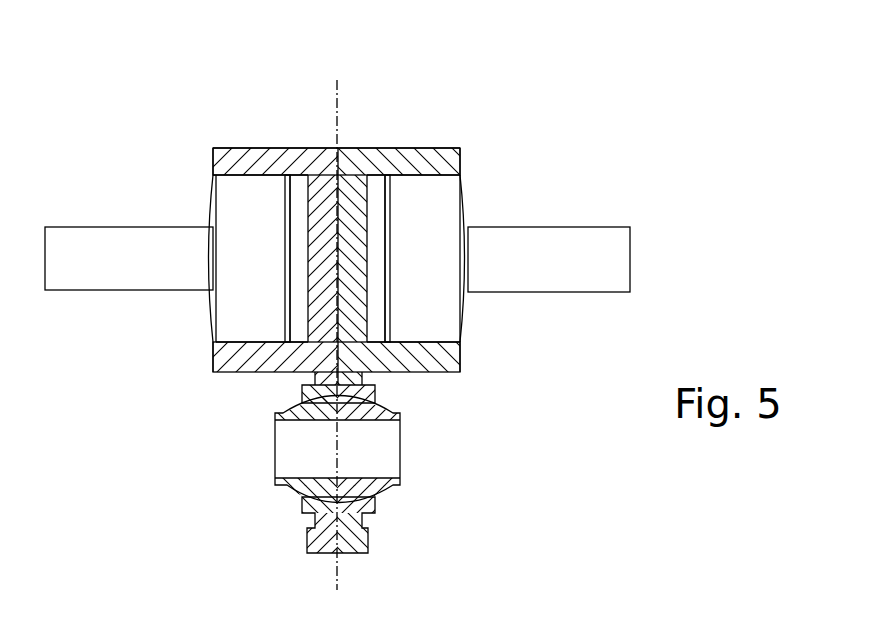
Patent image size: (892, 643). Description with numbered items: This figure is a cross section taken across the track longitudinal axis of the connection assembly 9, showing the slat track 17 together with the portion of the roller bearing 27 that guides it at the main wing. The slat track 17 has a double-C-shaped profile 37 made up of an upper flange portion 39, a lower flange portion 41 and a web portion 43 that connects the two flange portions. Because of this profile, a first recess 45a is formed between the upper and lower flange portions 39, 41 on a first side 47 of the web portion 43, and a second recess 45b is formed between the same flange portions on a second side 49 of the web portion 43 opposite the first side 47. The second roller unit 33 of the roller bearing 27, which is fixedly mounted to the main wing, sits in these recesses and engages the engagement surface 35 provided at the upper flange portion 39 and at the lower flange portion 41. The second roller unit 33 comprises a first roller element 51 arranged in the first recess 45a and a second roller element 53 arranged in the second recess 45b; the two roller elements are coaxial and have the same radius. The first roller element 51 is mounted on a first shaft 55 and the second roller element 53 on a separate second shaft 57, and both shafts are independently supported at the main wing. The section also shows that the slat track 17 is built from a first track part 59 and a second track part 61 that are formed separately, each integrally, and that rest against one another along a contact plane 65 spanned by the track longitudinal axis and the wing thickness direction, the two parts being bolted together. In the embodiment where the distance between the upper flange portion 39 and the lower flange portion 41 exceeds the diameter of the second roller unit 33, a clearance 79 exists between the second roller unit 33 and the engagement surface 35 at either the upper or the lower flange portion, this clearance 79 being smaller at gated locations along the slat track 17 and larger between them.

The connection assembly 9 is at (525, 98).
The slat track 17 is at (403, 158).
The roller bearing 27 is at (320, 258).
The second roller unit 33 is at (343, 264).
The engagement surface 35 is at (252, 160).
The double-C-shaped profile 37 is at (531, 398).
The upper flange portion 39 is at (277, 158).
The lower flange portion 41 is at (256, 372).
The web portion 43 is at (308, 281).
The first recess 45a is at (298, 199).
The second recess 45b is at (375, 192).
The first side 47 is at (308, 312).
The second side 49 is at (367, 312).
The first roller element 51 is at (235, 251).
The second roller element 53 is at (417, 251).
The first shaft 55 is at (73, 273).
The second shaft 57 is at (613, 273).
The first track part 59 is at (223, 158).
The second track part 61 is at (453, 158).
The contact plane 65 is at (336, 97).
The clearance 79 is at (210, 340).